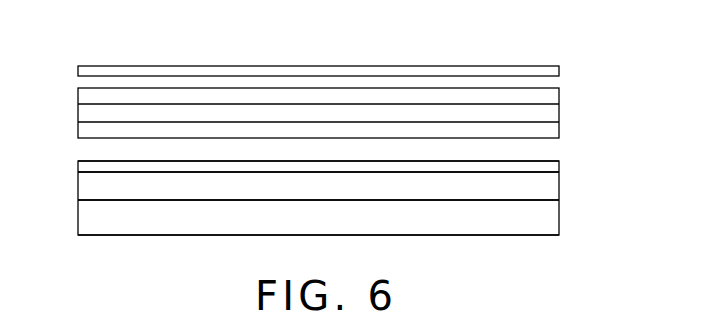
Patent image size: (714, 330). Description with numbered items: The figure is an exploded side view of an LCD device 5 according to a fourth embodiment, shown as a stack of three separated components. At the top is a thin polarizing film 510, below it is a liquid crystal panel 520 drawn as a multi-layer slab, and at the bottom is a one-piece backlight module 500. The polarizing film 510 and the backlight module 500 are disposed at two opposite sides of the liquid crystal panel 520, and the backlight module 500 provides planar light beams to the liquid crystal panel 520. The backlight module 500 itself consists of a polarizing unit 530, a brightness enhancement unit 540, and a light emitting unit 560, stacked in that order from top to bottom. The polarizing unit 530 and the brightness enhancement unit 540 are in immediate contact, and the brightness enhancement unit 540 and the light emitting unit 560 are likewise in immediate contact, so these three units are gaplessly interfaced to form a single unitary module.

The LCD device 5 is at (283, 39).
The backlight module 500 is at (72, 158).
The polarizing film 510 is at (558, 70).
The liquid crystal panel 520 is at (565, 88).
The polarizing unit 530 is at (552, 167).
The brightness enhancement unit 540 is at (550, 191).
The light emitting unit 560 is at (550, 219).